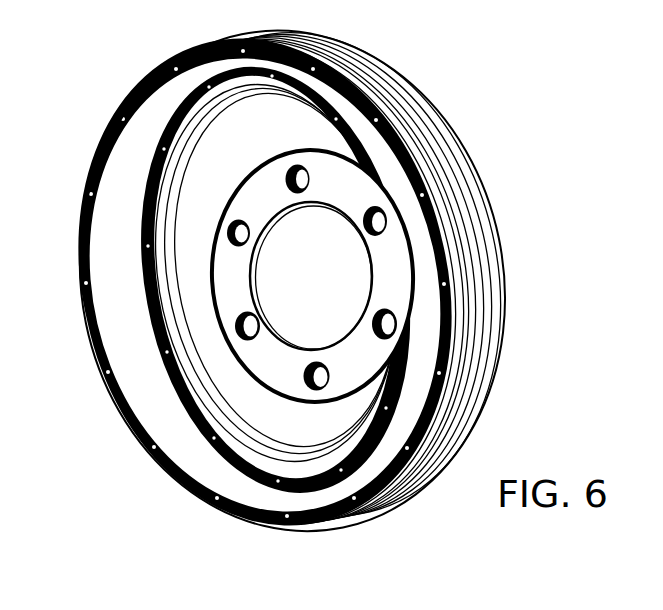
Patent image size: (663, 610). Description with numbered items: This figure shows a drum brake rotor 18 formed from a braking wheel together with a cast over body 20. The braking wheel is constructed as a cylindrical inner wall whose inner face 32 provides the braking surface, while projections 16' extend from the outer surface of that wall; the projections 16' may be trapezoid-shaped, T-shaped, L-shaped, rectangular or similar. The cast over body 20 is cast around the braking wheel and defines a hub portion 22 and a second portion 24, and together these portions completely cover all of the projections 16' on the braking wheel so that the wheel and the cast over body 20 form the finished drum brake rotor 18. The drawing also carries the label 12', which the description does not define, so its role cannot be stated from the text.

The drum brake rotor 18 is at (80, 137).
The cast over body 20 is at (318, 61).
The hub portion 22 is at (343, 131).
The projections 16' is at (283, 280).
The second portion 24 is at (460, 267).
The wheel 12' is at (393, 275).
The inner face 32 is at (145, 392).